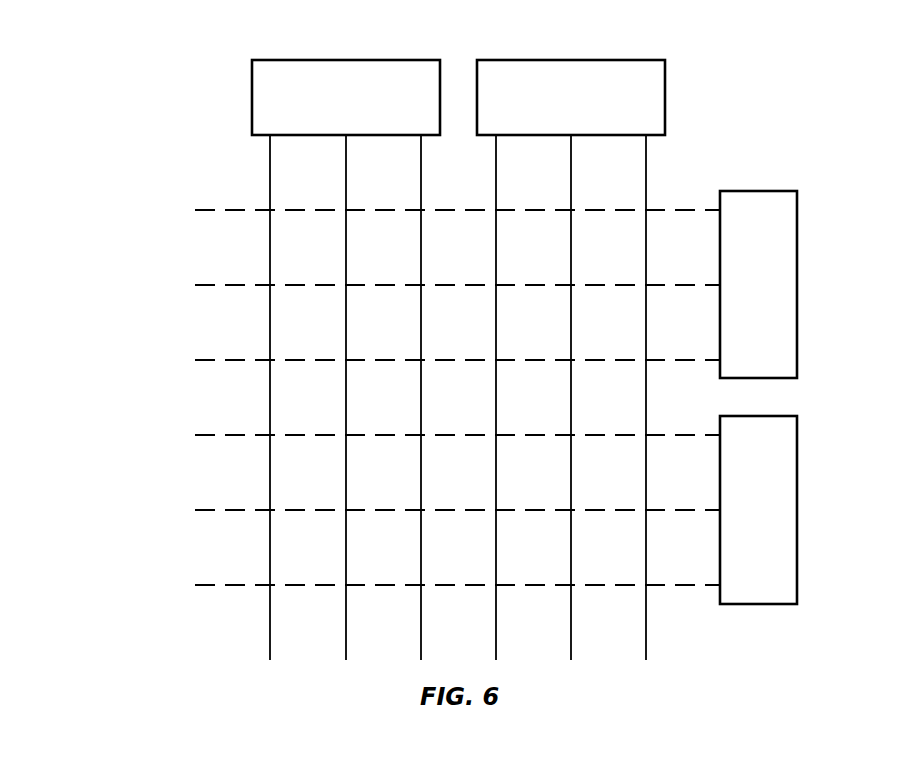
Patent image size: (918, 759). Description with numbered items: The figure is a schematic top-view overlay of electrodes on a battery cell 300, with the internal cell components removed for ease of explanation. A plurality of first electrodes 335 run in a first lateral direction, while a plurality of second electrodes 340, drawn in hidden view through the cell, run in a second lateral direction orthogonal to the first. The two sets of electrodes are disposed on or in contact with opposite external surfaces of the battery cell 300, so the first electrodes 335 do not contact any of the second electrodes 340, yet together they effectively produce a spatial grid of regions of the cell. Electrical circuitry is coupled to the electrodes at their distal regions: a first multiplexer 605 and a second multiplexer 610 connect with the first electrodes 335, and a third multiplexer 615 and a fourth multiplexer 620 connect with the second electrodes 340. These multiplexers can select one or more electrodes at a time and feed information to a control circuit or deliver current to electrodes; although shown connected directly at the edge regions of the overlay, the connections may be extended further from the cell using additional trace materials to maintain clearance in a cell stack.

The battery cell 300 is at (100, 123).
The first electrodes 335 is at (270, 195).
The second electrodes 340 is at (195, 285).
The first multiplexer 605 is at (252, 100).
The second multiplexer 610 is at (665, 100).
The third multiplexer 615 is at (797, 307).
The fourth multiplexer 620 is at (797, 531).